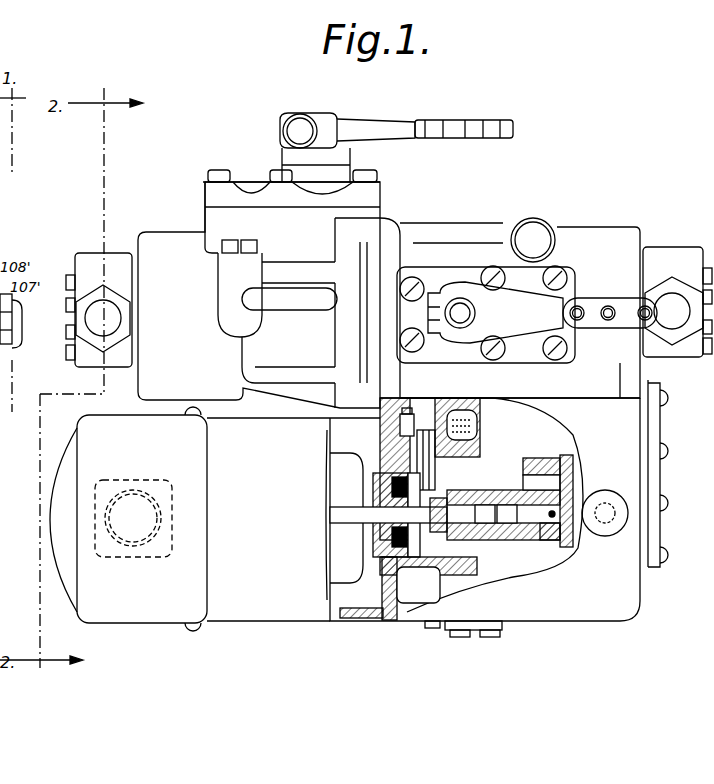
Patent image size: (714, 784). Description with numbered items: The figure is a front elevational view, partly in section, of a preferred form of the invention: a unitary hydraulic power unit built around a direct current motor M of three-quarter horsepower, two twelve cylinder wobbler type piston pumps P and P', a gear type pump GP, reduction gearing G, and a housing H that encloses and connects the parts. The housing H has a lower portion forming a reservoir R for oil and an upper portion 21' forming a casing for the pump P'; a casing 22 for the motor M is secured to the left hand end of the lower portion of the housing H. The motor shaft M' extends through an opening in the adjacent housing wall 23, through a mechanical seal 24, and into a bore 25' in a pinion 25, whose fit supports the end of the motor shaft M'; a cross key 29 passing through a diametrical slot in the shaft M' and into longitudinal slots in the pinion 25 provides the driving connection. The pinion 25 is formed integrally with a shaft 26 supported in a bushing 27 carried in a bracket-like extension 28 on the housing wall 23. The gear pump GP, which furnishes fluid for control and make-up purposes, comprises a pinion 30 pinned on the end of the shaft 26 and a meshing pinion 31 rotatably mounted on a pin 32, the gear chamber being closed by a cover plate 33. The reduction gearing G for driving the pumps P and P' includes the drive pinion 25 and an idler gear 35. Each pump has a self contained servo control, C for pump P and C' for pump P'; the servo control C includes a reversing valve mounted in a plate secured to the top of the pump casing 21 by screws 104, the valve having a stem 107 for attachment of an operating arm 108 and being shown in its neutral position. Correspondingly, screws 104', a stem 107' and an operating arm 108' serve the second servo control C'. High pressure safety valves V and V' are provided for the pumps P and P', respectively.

The screws 104 is at (291, 179).
The stem 107 is at (308, 114).
The operating arm 108 is at (425, 111).
The servo control C is at (341, 164).
The piston pump P is at (259, 295).
The pump casing 21 is at (277, 328).
The second piston pump P' is at (510, 299).
The second servo control C' is at (520, 236).
The screws 104' is at (486, 305).
The stem 107' is at (495, 335).
The operating arm 108' is at (588, 343).
The upper portion of housing 21' is at (520, 369).
The high pressure safety valve V' is at (677, 281).
The high pressure safety valve V is at (98, 297).
The direct current motor M is at (215, 519).
The housing H is at (614, 424).
The motor shaft M' is at (351, 518).
The reduction gearing G is at (446, 488).
The idler gear 35 is at (402, 440).
The cross key 29 is at (420, 513).
The reservoir R is at (515, 580).
The bracket-like extension 28 is at (503, 535).
The pinion 25 is at (503, 552).
The shaft 26 is at (490, 533).
The bushing 27 is at (517, 533).
The meshing pinion 31 is at (549, 460).
The pin 32 is at (535, 480).
The cover plate 33 is at (567, 468).
The gear type pump GP is at (576, 500).
The pinion 30 is at (548, 522).
The mechanical seal 24 is at (375, 588).
The housing wall 23 is at (396, 578).
The bore 25' is at (427, 585).
The motor casing 22 is at (360, 618).